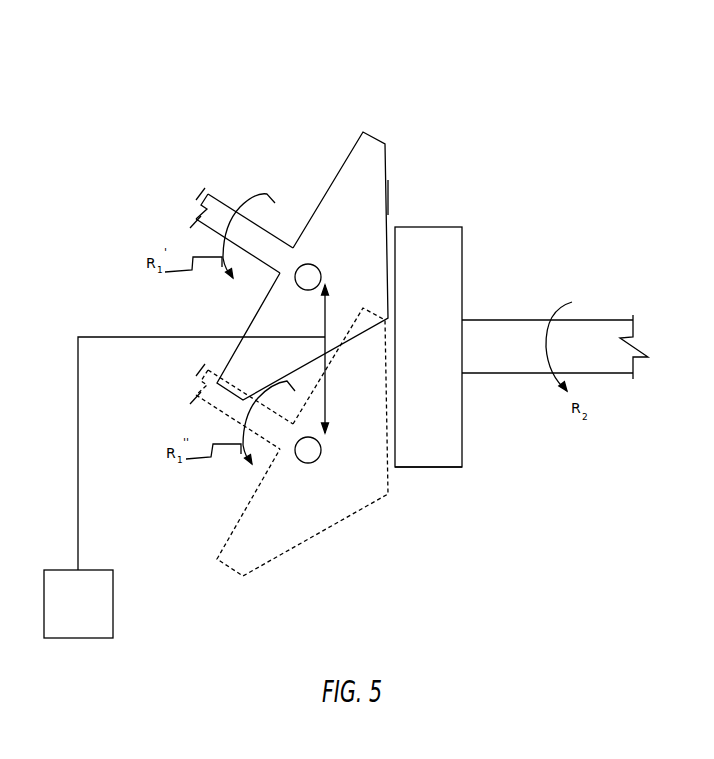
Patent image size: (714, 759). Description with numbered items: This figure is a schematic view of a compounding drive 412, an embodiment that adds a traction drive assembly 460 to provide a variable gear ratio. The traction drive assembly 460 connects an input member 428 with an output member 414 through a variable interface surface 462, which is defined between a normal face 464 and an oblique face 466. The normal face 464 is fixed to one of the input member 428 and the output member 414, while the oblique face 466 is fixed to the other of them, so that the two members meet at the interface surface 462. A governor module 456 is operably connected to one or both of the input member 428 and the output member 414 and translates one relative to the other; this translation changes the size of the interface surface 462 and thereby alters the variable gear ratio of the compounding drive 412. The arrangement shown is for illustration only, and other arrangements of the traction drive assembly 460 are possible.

The compounding drive 412 is at (334, 390).
The output member 414 is at (502, 360).
The input member 428 is at (286, 242).
The governor module 456 is at (184, 487).
The traction drive assembly 460 is at (417, 130).
The variable interface surface 462 is at (398, 270).
The normal face 464 is at (432, 450).
The oblique face 466 is at (380, 198).